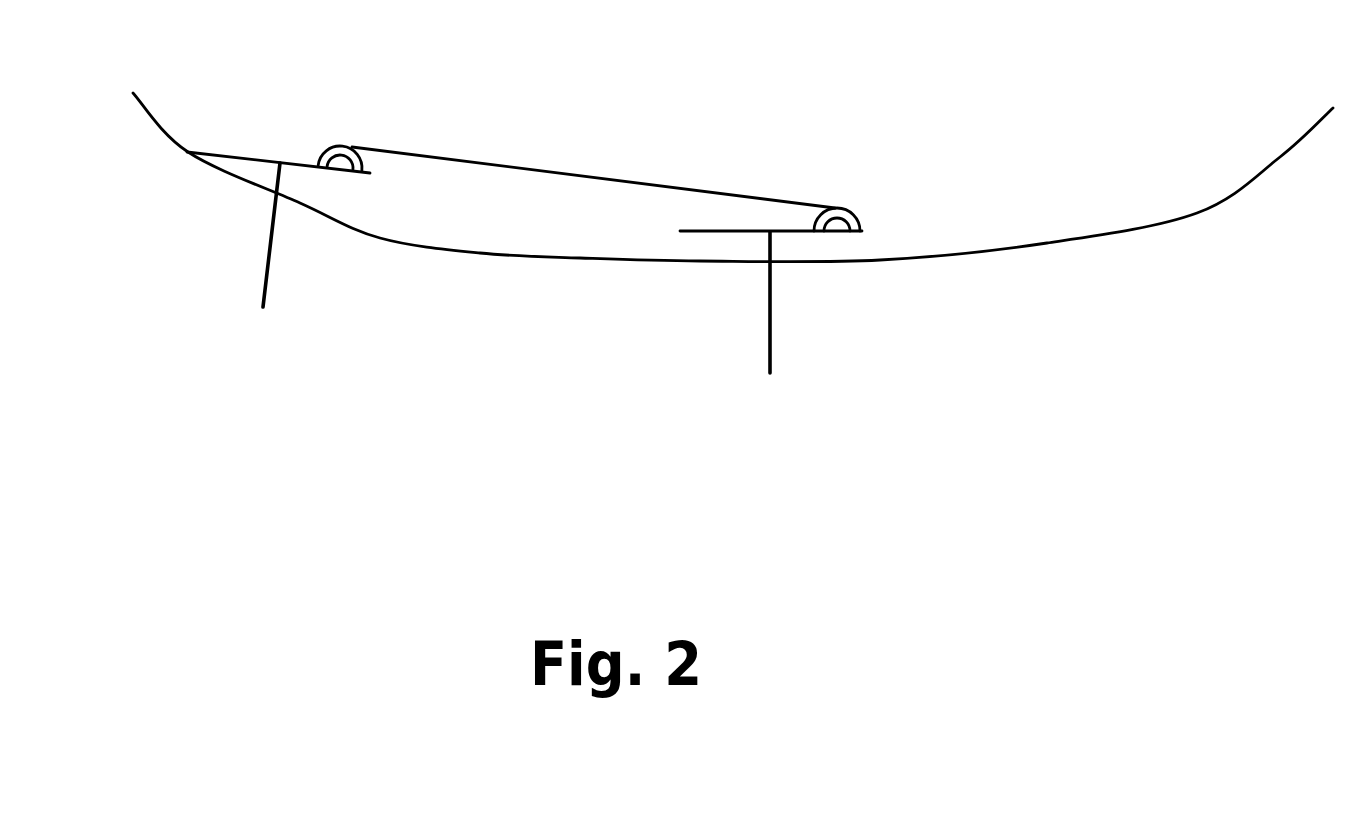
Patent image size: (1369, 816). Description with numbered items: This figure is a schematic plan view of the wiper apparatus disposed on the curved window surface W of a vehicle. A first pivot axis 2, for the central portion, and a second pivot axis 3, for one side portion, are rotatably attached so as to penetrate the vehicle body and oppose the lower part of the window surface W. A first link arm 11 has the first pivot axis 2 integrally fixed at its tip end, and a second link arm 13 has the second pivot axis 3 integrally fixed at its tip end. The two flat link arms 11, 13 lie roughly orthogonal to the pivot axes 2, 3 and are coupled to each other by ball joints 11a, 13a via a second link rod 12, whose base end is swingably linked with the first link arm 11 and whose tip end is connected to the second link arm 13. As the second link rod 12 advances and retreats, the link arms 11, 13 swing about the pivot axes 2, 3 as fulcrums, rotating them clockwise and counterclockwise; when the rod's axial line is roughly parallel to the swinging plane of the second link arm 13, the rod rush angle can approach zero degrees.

The window surface W is at (1197, 213).
The first pivot axis 2 is at (772, 307).
The second pivot axis 3 is at (270, 263).
The first link arm 11 is at (720, 232).
The ball joint 11a is at (853, 213).
The second link rod 12 is at (630, 183).
The second link arm 13 is at (227, 155).
The ball joint 13a is at (327, 153).